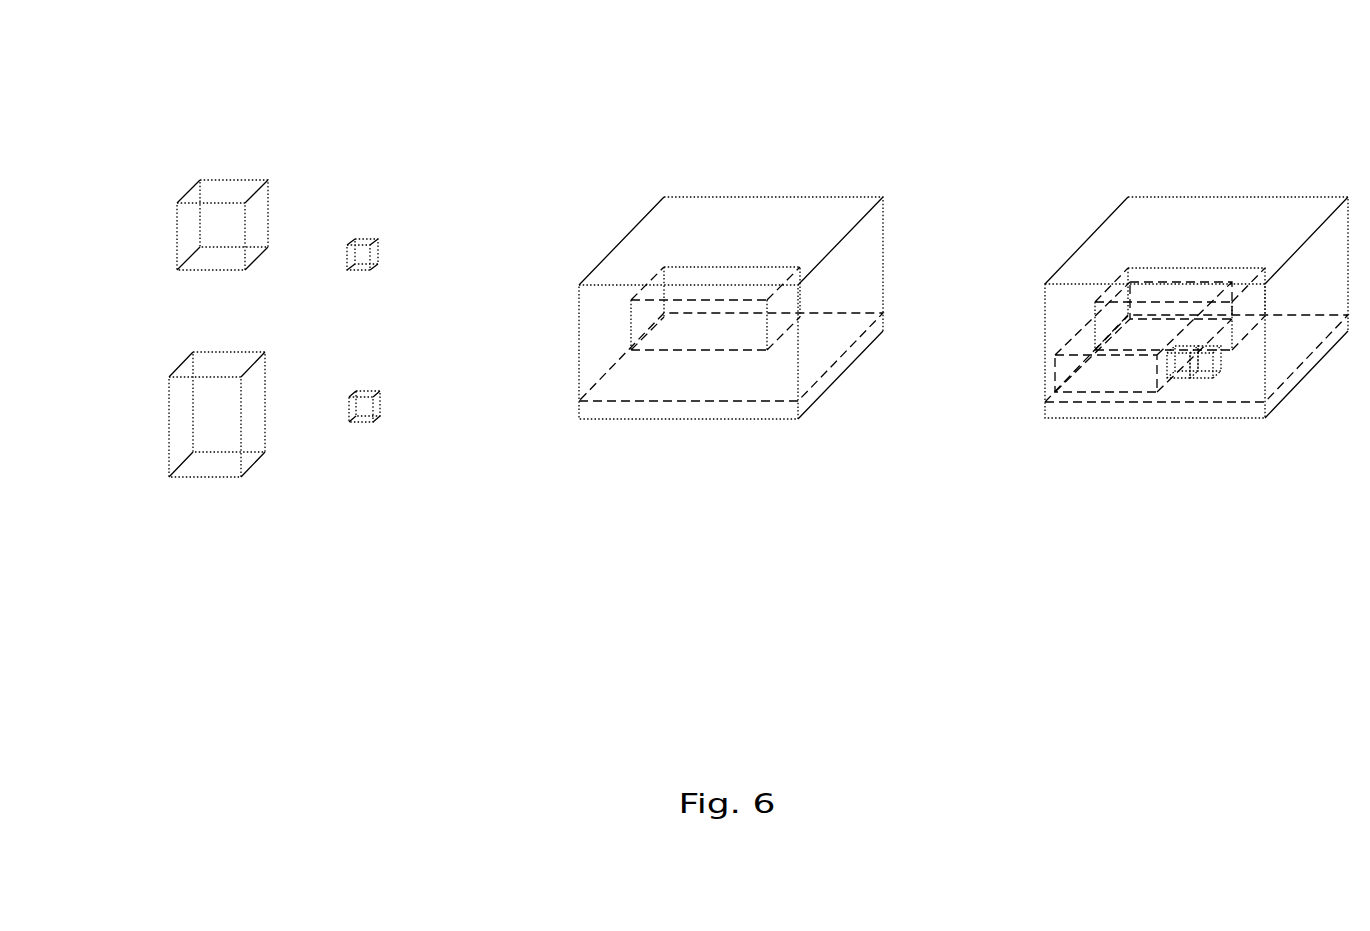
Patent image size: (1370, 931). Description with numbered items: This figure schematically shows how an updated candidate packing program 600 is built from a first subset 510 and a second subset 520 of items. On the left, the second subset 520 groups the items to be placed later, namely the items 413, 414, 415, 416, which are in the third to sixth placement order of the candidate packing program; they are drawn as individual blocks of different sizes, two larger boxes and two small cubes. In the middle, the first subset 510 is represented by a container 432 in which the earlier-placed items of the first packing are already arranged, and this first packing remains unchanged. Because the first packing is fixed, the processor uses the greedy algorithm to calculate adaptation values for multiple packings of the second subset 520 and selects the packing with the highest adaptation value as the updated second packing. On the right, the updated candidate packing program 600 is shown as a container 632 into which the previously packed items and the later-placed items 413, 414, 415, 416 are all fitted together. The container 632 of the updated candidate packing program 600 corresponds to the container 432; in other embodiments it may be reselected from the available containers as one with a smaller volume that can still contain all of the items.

The second subset 520 is at (155, 103).
The first subset 510 is at (578, 103).
The updated candidate packing program 600 is at (1106, 146).
The item 413 is at (215, 269).
The item 414 is at (219, 478).
The item 415 is at (361, 271).
The item 416 is at (363, 423).
The container 432 is at (703, 420).
The container 632 is at (1165, 419).